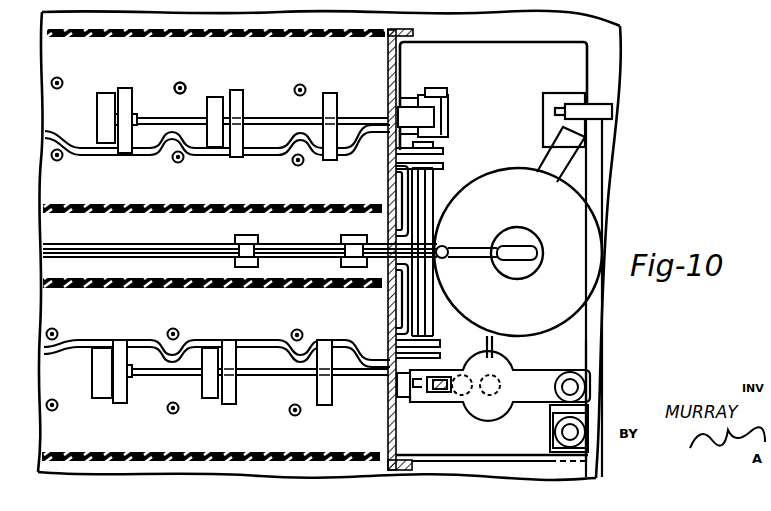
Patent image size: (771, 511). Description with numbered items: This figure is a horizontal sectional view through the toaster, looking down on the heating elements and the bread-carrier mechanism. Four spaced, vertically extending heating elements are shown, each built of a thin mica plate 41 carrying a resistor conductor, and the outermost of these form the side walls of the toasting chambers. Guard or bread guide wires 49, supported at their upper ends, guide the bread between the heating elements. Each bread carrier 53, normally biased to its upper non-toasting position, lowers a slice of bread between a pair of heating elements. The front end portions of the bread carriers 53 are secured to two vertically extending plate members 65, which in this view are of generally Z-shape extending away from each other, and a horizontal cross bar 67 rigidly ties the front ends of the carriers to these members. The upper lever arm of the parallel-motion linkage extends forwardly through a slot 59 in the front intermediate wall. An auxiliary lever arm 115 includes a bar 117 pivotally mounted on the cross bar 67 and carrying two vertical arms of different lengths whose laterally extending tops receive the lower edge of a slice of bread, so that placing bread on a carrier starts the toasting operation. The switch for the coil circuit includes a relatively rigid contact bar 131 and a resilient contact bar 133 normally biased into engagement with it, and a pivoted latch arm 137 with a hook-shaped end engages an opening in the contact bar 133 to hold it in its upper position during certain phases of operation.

The plate of electric insulating material 41 is at (216, 46).
The guard or bread guide wire 49 is at (175, 86).
The bread carrier 53 is at (343, 158).
The slot 59 is at (372, 240).
The vertically extending plate member 65 is at (405, 214).
The horizontal cross bar 67 is at (452, 190).
The auxiliary lever arm 115 is at (352, 114).
The bar 117 is at (262, 112).
The relatively rigid contact bar 131 is at (494, 410).
The resilient contact bar 133 is at (458, 410).
The latch arm 137 is at (444, 394).